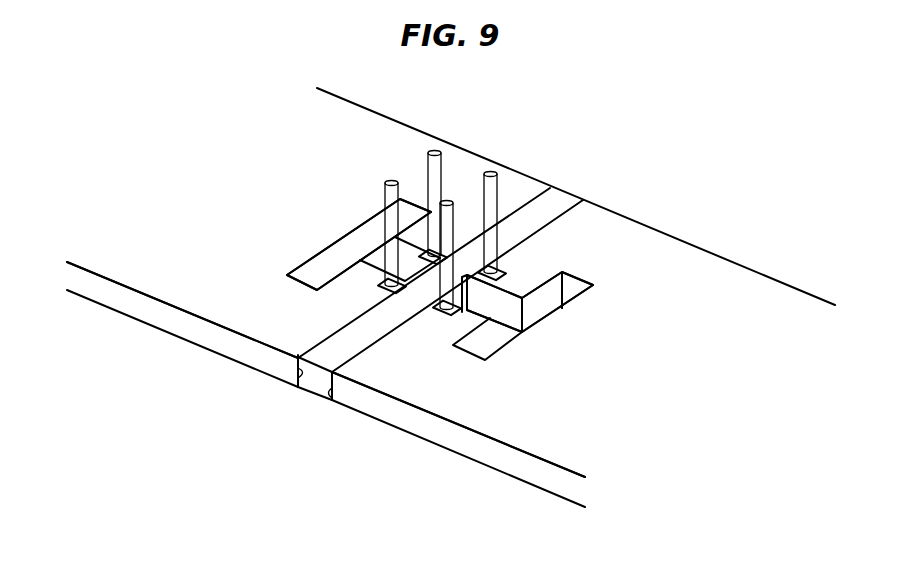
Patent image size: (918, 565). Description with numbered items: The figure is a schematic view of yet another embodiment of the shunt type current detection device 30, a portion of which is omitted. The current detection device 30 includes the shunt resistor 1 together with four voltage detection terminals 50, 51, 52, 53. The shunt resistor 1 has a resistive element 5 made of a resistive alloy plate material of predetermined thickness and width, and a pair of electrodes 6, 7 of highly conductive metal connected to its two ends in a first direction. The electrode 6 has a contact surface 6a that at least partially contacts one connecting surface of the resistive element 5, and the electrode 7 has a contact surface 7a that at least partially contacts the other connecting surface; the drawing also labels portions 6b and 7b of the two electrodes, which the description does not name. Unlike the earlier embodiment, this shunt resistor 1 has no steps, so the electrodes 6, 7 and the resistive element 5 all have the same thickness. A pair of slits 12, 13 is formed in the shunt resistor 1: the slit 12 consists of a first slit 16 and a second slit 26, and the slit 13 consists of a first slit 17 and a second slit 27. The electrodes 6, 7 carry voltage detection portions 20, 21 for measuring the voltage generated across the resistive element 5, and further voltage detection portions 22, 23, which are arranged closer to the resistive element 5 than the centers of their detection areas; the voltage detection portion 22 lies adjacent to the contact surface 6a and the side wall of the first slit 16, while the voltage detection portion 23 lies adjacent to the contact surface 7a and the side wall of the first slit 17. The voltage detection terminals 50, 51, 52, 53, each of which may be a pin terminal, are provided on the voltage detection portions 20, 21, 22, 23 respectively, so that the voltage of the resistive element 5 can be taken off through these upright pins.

The shunt resistor 1 is at (608, 207).
The current detection device 30 is at (703, 198).
The resistive element 5 is at (318, 384).
The electrode 6 is at (186, 345).
The contact surface 6a is at (292, 385).
The upper edge of first bus bar 6b is at (170, 255).
The electrode 7 is at (460, 455).
The contact surface 7a is at (330, 400).
The upper edge of second bus bar 7b is at (574, 411).
The slit 12 is at (346, 224).
The slit 13 is at (578, 308).
The first slit 16 is at (405, 269).
The first slit 17 is at (504, 310).
The voltage detection portion 20 is at (427, 248).
The voltage detection portion 21 is at (505, 268).
The voltage detection portion 22 is at (378, 287).
The voltage detection portion 23 is at (457, 312).
The second slit 26 is at (345, 252).
The second slit 27 is at (543, 307).
The voltage detection terminal 50 is at (435, 151).
The voltage detection terminal 51 is at (491, 173).
The voltage detection terminal 52 is at (388, 200).
The voltage detection terminal 53 is at (448, 202).